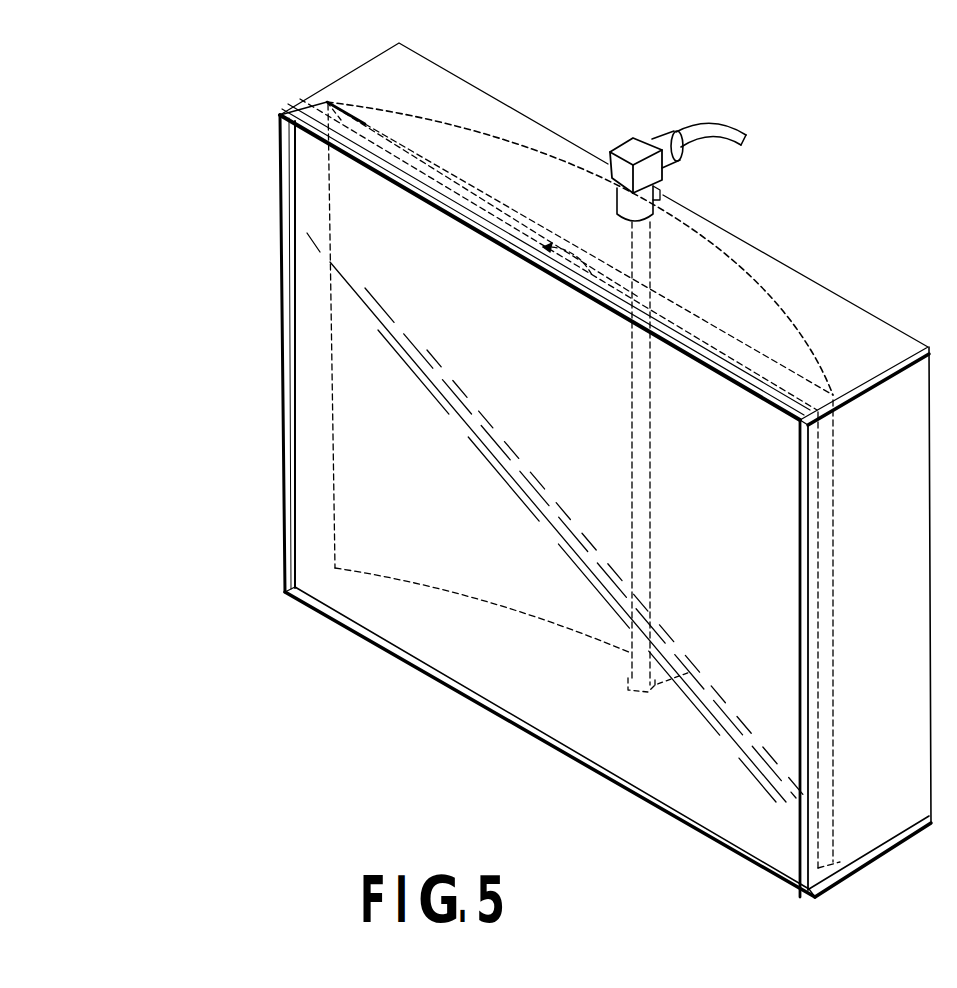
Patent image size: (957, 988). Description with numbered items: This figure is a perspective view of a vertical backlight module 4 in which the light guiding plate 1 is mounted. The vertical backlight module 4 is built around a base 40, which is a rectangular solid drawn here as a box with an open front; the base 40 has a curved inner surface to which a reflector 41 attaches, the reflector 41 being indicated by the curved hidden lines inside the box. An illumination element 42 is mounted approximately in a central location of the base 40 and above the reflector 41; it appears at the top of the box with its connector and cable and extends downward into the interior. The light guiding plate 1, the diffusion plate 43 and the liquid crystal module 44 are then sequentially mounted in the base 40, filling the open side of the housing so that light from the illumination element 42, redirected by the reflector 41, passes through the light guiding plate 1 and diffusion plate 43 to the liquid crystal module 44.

The light guiding plate 1 is at (327, 102).
The vertical backlight module 4 is at (193, 226).
The base 40 is at (728, 238).
The reflector 41 is at (472, 558).
The illumination element 42 is at (633, 250).
The diffusion plate 43 is at (280, 115).
The liquid crystal module 44 is at (345, 358).